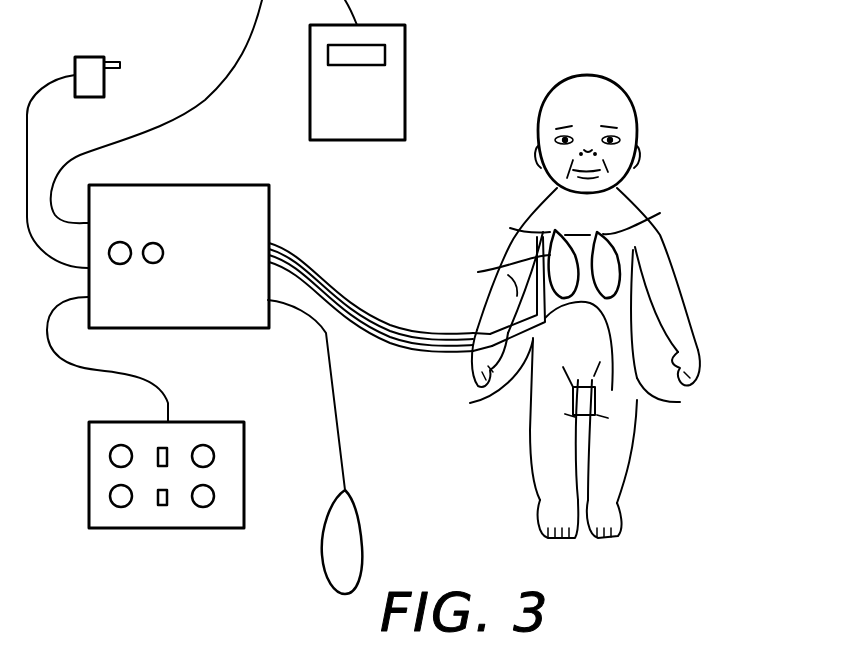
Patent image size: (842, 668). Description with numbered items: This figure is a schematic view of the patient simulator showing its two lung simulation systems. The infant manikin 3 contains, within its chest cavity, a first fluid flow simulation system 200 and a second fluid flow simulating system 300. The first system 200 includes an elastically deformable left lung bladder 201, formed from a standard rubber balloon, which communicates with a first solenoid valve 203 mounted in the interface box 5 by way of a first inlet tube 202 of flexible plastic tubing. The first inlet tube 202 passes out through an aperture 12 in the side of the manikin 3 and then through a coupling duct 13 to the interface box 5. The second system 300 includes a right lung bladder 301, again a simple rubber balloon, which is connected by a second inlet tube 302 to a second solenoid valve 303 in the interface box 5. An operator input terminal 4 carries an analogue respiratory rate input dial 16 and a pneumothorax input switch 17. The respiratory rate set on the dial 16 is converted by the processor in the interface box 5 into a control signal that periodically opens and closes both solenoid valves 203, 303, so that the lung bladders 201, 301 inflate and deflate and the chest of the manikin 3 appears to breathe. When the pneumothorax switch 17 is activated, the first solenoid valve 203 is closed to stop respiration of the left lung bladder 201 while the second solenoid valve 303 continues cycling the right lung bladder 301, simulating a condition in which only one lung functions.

The manikin 3 is at (558, 85).
The operator input terminal 4 is at (88, 458).
The interface box 5 is at (228, 185).
The aperture 12 is at (480, 401).
The coupling duct 13 is at (340, 273).
The analogue respiratory rate input dial 16 is at (212, 445).
The pneumothorax input switch 17 is at (158, 497).
The first fluid flow simulation system 200 is at (652, 203).
The left lung bladder 201 is at (660, 213).
The first inlet tube 202 is at (668, 402).
The first solenoid valve 203 is at (120, 242).
The second fluid flow simulating system 300 is at (522, 190).
The right lung bladder 301 is at (491, 271).
The second inlet tube 302 is at (537, 229).
The second solenoid valve 303 is at (163, 253).